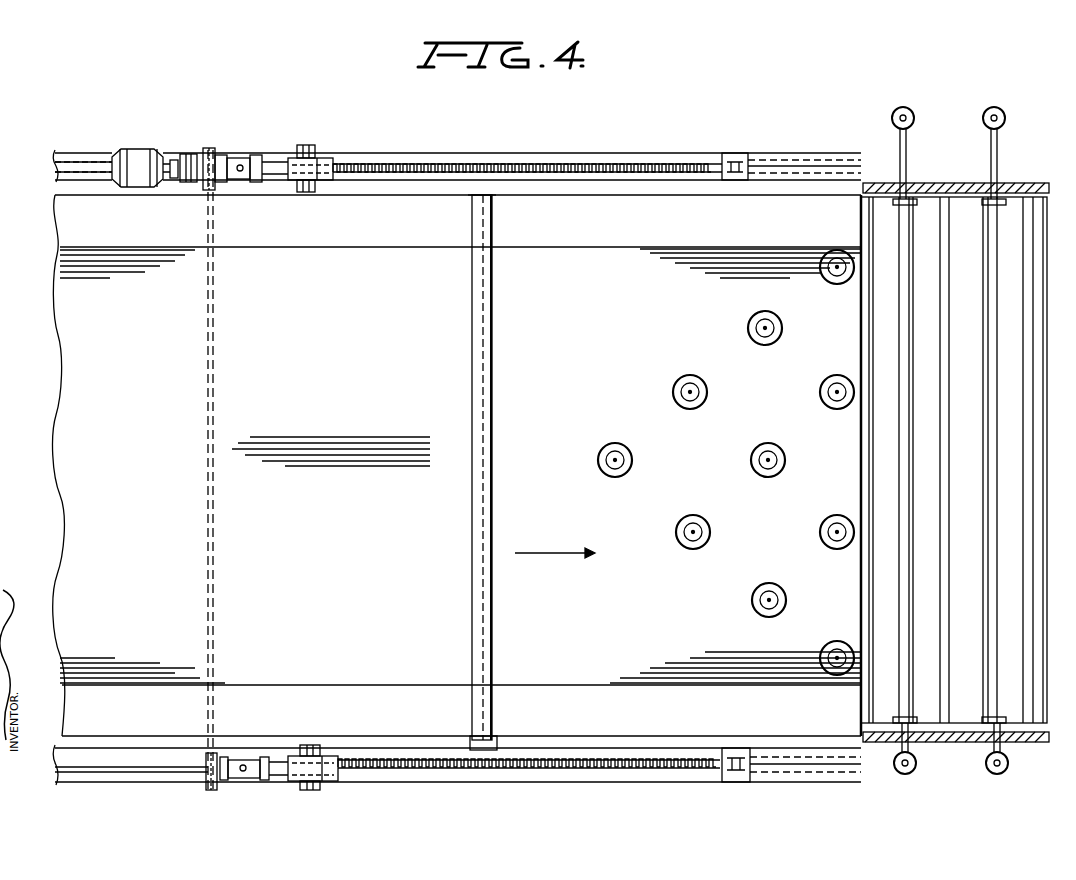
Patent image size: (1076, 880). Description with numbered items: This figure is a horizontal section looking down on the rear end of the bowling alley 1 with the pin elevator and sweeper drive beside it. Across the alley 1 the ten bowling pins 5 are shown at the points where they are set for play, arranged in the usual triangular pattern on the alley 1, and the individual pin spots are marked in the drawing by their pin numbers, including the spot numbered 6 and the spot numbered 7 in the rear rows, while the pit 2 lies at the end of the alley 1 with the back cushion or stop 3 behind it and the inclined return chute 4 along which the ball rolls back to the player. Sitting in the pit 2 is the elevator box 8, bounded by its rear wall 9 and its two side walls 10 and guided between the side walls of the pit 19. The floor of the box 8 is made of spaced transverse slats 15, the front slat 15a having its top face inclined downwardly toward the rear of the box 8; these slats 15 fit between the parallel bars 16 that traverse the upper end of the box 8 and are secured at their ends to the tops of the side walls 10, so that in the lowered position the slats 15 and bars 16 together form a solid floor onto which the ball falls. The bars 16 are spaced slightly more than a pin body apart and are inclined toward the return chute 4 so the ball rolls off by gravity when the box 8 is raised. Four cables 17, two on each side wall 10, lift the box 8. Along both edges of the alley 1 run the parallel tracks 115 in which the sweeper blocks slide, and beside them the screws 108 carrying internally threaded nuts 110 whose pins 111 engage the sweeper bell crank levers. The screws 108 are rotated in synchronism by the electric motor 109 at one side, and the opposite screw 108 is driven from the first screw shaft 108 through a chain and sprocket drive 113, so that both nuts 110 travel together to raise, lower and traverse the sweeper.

The bowling alley 1 is at (78, 424).
The stationary pit 2 is at (690, 401).
The back cushion or stop 3 is at (693, 524).
The inclined return chute 4 is at (765, 339).
The bowling pins 5 is at (768, 469).
The pin position 6 roller 6 is at (769, 590).
The pin position 7 roller 7 is at (837, 276).
The box 8 is at (837, 401).
The rear wall 9 is at (1040, 656).
The side walls 10 is at (940, 166).
The slats 15 is at (968, 460).
The front slat 15a is at (888, 460).
The parallel bars 16 is at (906, 461).
The cables 17 is at (989, 110).
The side walls of pit 19 is at (1046, 168).
The screws 108 is at (567, 167).
The electric motor 109 is at (161, 133).
The nuts 110 is at (323, 163).
The pins 111 is at (321, 130).
The chain and sprocket drive 113 is at (213, 388).
The tracks 115 is at (474, 155).